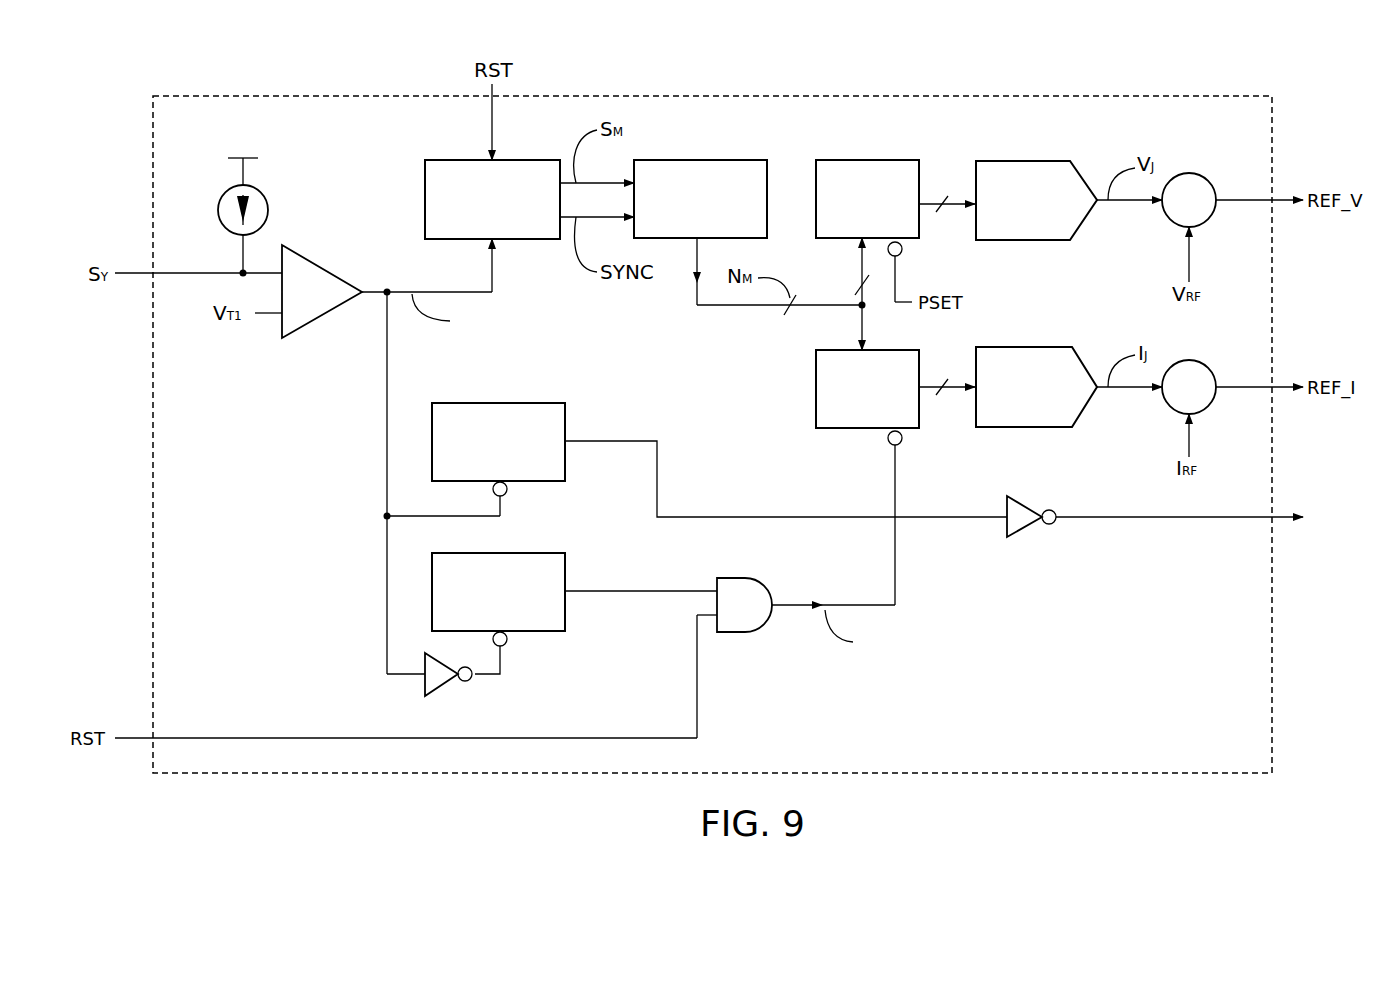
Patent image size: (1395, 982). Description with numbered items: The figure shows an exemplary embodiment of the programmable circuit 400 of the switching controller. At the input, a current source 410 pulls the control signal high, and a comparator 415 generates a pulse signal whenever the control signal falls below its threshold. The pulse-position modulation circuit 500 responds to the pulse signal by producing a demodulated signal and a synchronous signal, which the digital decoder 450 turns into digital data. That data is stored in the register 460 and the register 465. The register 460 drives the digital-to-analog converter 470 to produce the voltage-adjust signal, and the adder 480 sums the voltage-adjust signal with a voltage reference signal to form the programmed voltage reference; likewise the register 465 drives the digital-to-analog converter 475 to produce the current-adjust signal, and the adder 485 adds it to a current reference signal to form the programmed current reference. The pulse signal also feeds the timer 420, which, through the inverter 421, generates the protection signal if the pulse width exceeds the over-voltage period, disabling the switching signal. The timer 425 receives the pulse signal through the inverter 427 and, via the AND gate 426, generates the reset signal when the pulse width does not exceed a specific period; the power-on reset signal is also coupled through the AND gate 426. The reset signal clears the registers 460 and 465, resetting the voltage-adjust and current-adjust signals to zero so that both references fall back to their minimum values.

The programmable circuit 400 is at (1272, 135).
The current source 410 is at (218, 212).
The comparator 415 is at (320, 266).
The timer (Timer_L) 420 is at (530, 402).
The inverter 421 is at (1027, 533).
The timer (Timer_H) 425 is at (520, 552).
The AND gate 426 is at (745, 577).
The inverter 427 is at (440, 690).
The digital decoder 450 is at (697, 158).
The register 460 is at (867, 158).
The register 465 is at (815, 403).
The digital-to-analog converter 470 is at (1025, 158).
The digital-to-analog converter 475 is at (1027, 428).
The adder 480 is at (1193, 172).
The adder 485 is at (1193, 360).
The pulse-position modulation circuit 500 is at (447, 158).